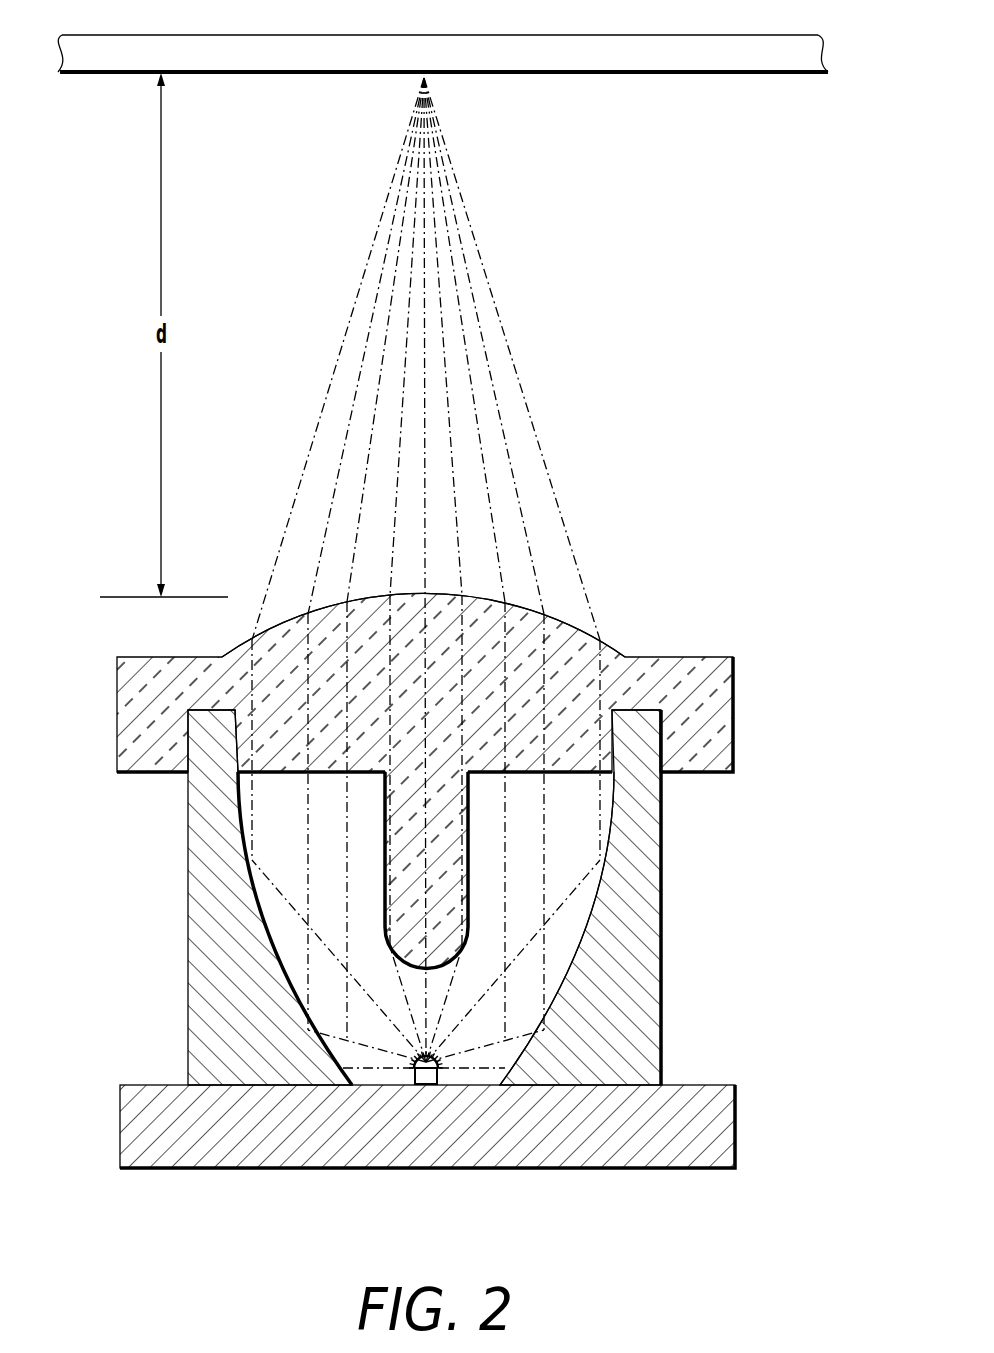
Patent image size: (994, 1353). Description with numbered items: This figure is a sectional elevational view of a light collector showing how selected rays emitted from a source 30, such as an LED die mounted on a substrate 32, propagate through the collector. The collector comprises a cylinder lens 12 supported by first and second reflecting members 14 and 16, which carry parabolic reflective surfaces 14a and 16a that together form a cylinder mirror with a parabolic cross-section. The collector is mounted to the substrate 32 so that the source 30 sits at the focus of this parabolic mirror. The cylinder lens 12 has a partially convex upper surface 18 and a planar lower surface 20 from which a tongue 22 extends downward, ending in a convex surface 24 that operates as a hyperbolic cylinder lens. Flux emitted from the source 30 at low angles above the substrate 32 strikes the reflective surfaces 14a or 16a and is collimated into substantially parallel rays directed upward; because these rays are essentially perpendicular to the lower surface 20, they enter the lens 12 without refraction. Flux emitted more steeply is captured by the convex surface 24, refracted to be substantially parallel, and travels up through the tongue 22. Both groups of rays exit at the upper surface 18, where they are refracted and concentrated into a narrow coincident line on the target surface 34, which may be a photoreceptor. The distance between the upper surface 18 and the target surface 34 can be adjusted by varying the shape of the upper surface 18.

The cylinder lens 12 is at (735, 692).
The first reflecting member 14 is at (196, 946).
The reflective surface 14a is at (327, 1038).
The second reflecting member 16 is at (651, 937).
The reflective surface 16a is at (525, 1040).
The upper surface 18 is at (611, 642).
The lower surface 20 is at (291, 778).
The tongue 22 is at (381, 866).
The convex surface 24 is at (439, 974).
The source 30 is at (427, 1084).
The substrate 32 is at (737, 1096).
The target surface 34 is at (797, 34).